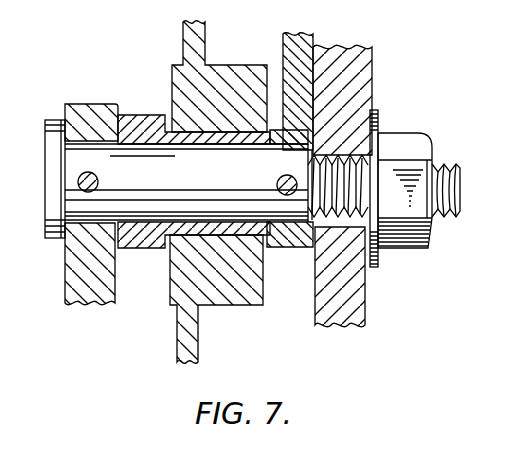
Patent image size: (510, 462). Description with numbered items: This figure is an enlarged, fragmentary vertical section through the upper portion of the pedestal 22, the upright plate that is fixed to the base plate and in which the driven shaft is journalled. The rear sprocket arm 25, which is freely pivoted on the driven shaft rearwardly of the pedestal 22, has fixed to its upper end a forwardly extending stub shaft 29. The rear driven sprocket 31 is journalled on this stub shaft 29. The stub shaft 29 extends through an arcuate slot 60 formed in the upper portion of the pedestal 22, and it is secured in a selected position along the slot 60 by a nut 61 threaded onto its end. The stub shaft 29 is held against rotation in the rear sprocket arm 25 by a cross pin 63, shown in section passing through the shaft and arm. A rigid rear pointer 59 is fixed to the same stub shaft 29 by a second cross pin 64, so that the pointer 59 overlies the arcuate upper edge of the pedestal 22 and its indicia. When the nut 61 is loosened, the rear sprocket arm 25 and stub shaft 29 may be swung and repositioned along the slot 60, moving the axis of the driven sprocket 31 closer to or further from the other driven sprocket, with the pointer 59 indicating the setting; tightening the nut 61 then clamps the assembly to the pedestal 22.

The pedestal 22 is at (357, 298).
The rear sprocket arm 25 is at (70, 282).
The stub shaft 29 is at (136, 141).
The rear driven sprocket 31 is at (192, 44).
The rear pointer 59 is at (312, 45).
The arcuate slot 60 is at (318, 247).
The nut 61 is at (418, 137).
The cross pin 63 is at (78, 181).
The cross pin 64 is at (280, 180).